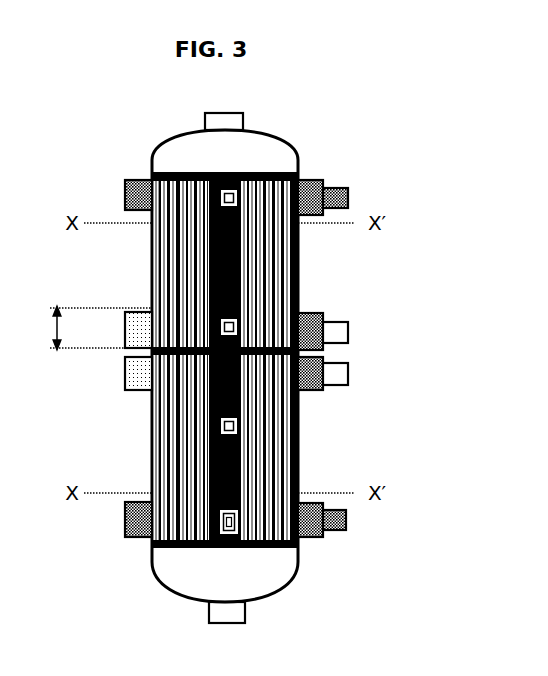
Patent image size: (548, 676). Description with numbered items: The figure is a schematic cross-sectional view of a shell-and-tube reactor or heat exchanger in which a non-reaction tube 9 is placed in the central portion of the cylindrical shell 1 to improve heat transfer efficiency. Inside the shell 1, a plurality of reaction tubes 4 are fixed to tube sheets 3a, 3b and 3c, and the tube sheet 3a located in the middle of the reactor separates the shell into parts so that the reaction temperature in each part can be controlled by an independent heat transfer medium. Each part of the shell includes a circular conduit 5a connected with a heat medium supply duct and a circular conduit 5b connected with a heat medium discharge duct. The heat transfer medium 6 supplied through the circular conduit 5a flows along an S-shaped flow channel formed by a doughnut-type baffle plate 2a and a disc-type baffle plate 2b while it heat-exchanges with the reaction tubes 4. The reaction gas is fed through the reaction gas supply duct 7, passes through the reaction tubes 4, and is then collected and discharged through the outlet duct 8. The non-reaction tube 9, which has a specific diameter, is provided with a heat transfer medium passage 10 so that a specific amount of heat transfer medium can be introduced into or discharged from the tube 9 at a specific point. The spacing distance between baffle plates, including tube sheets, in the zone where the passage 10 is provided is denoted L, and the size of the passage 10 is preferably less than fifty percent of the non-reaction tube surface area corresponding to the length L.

The cylindrical shell 1 is at (298, 274).
The doughnut-type baffle plate 2a is at (295, 480).
The disc-type baffle plate 2b is at (193, 266).
The tube sheet 3a is at (145, 353).
The tube sheet 3b is at (150, 167).
The tube sheet 3c is at (140, 540).
The reaction tubes 4 is at (295, 437).
The circular conduit connected with heat medium supply duct 5a is at (330, 340).
The circular conduit connected with heat medium discharge duct 5b is at (310, 200).
The heat transfer medium 6 is at (164, 440).
The reaction gas supply duct 7 is at (232, 613).
The outlet duct 8 is at (226, 121).
The non-reaction tube 9 is at (229, 191).
The heat transfer medium passage 10 is at (238, 535).
The spacing distance between baffle plates L is at (101, 328).